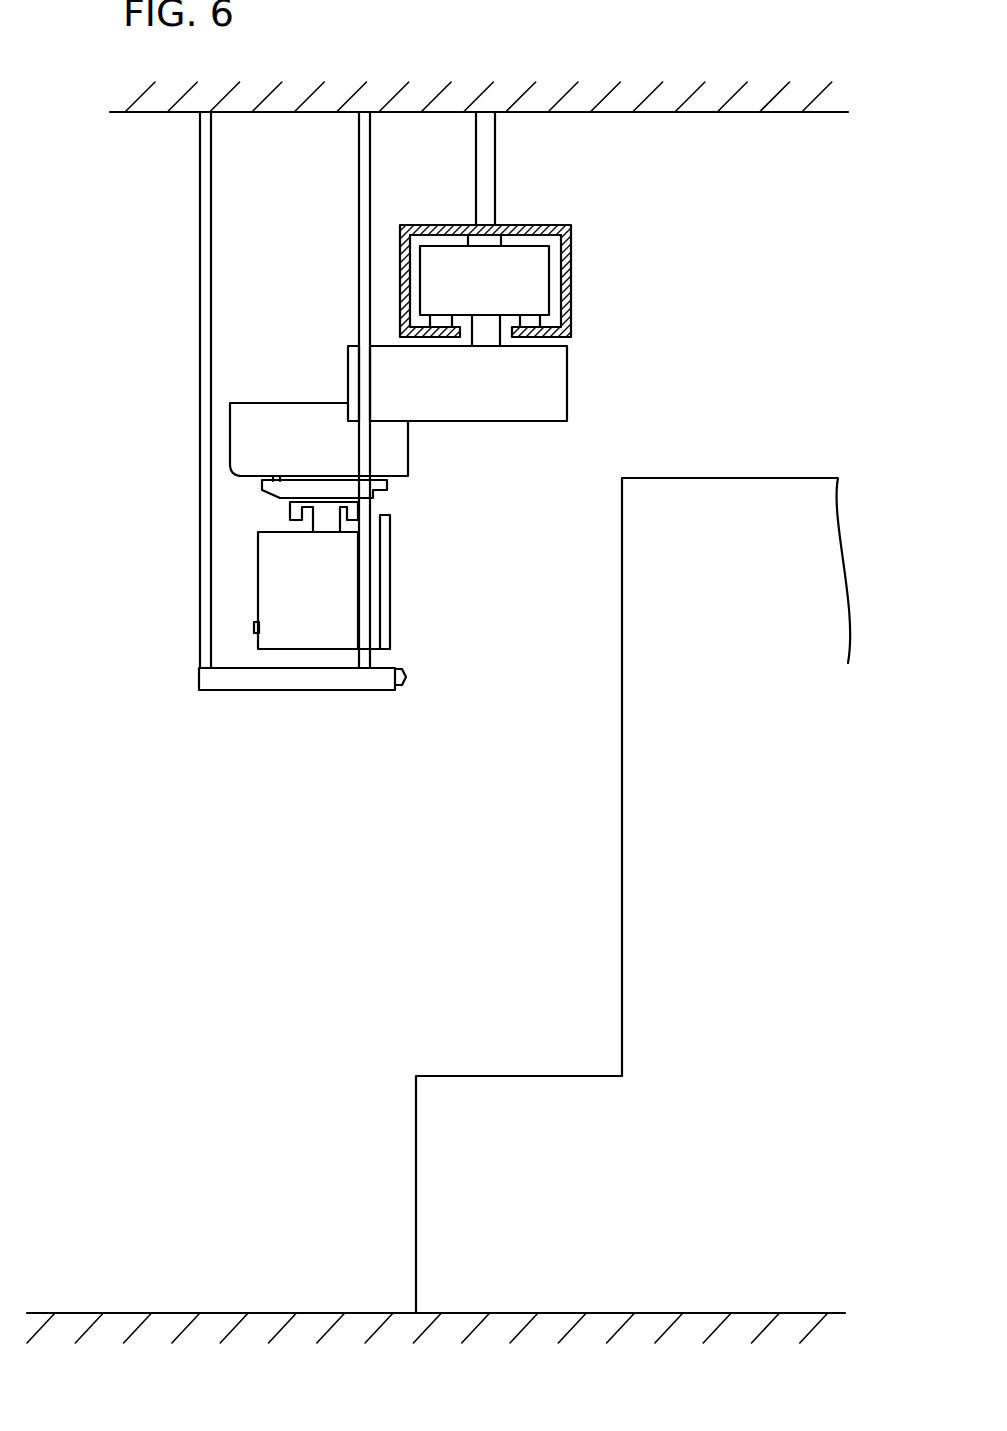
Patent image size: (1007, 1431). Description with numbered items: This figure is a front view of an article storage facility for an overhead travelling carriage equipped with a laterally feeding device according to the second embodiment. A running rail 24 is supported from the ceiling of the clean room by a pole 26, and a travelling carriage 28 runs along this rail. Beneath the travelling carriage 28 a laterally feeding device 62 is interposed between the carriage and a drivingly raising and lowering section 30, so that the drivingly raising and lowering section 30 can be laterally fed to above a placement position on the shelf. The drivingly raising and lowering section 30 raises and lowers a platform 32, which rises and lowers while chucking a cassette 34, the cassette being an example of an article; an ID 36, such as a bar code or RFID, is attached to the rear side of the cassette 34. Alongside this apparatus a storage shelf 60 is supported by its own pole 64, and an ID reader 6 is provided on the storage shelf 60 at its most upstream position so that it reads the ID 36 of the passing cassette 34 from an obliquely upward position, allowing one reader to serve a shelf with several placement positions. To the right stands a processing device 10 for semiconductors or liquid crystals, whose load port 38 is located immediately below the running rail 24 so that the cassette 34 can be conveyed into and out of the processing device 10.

The ID reader 6 is at (406, 676).
The processing device 10 is at (784, 478).
The running rail 24 is at (571, 300).
The pole 26 is at (495, 163).
The travelling carriage 28 is at (530, 272).
The drivingly raising and lowering section 30 is at (398, 458).
The platform 32 is at (343, 492).
The cassette 34 is at (277, 562).
The ID 36 is at (254, 630).
The load port 38 is at (520, 1075).
The storage shelf 60 is at (282, 700).
The laterally feeding device 62 is at (560, 390).
The pole 64 is at (357, 285).